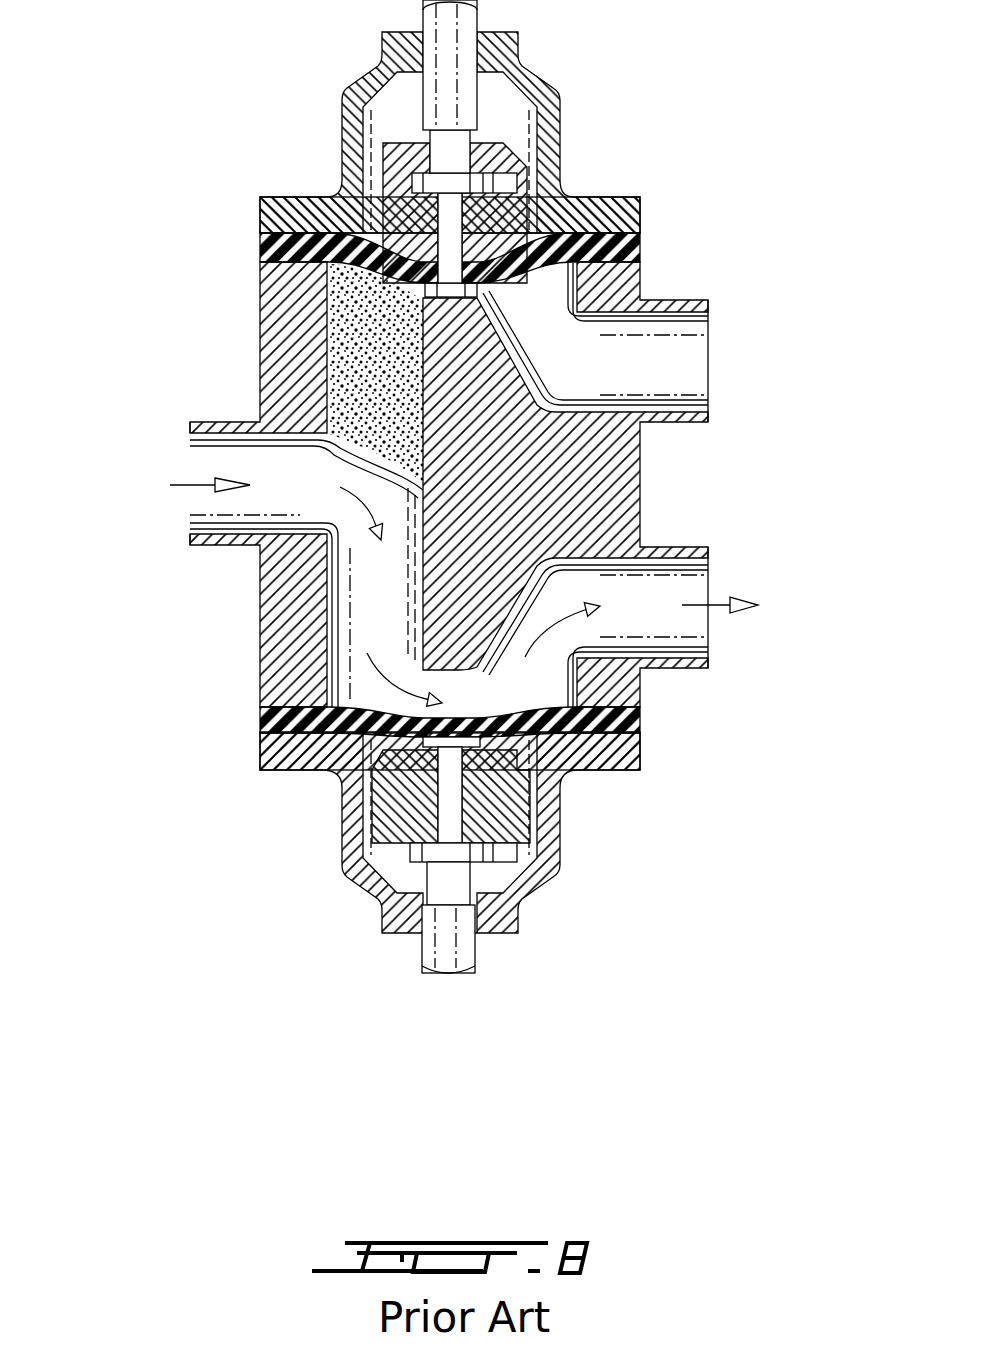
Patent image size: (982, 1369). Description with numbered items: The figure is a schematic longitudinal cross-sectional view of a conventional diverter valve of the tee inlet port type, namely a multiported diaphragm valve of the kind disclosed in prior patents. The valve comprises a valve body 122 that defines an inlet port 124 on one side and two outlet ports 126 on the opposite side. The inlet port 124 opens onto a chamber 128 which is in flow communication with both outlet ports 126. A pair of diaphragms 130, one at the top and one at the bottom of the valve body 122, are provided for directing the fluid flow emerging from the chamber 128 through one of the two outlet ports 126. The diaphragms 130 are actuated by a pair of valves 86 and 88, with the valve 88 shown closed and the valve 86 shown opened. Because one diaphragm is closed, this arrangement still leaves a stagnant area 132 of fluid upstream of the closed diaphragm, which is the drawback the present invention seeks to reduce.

The valve 86 is at (340, 815).
The valve 88 is at (340, 133).
The valve body 122 is at (258, 398).
The inlet port 124 is at (188, 507).
The outlet ports 126 is at (712, 380).
The chamber 128 is at (360, 595).
The diaphragms 130 is at (648, 248).
The stagnant area 132 is at (343, 348).